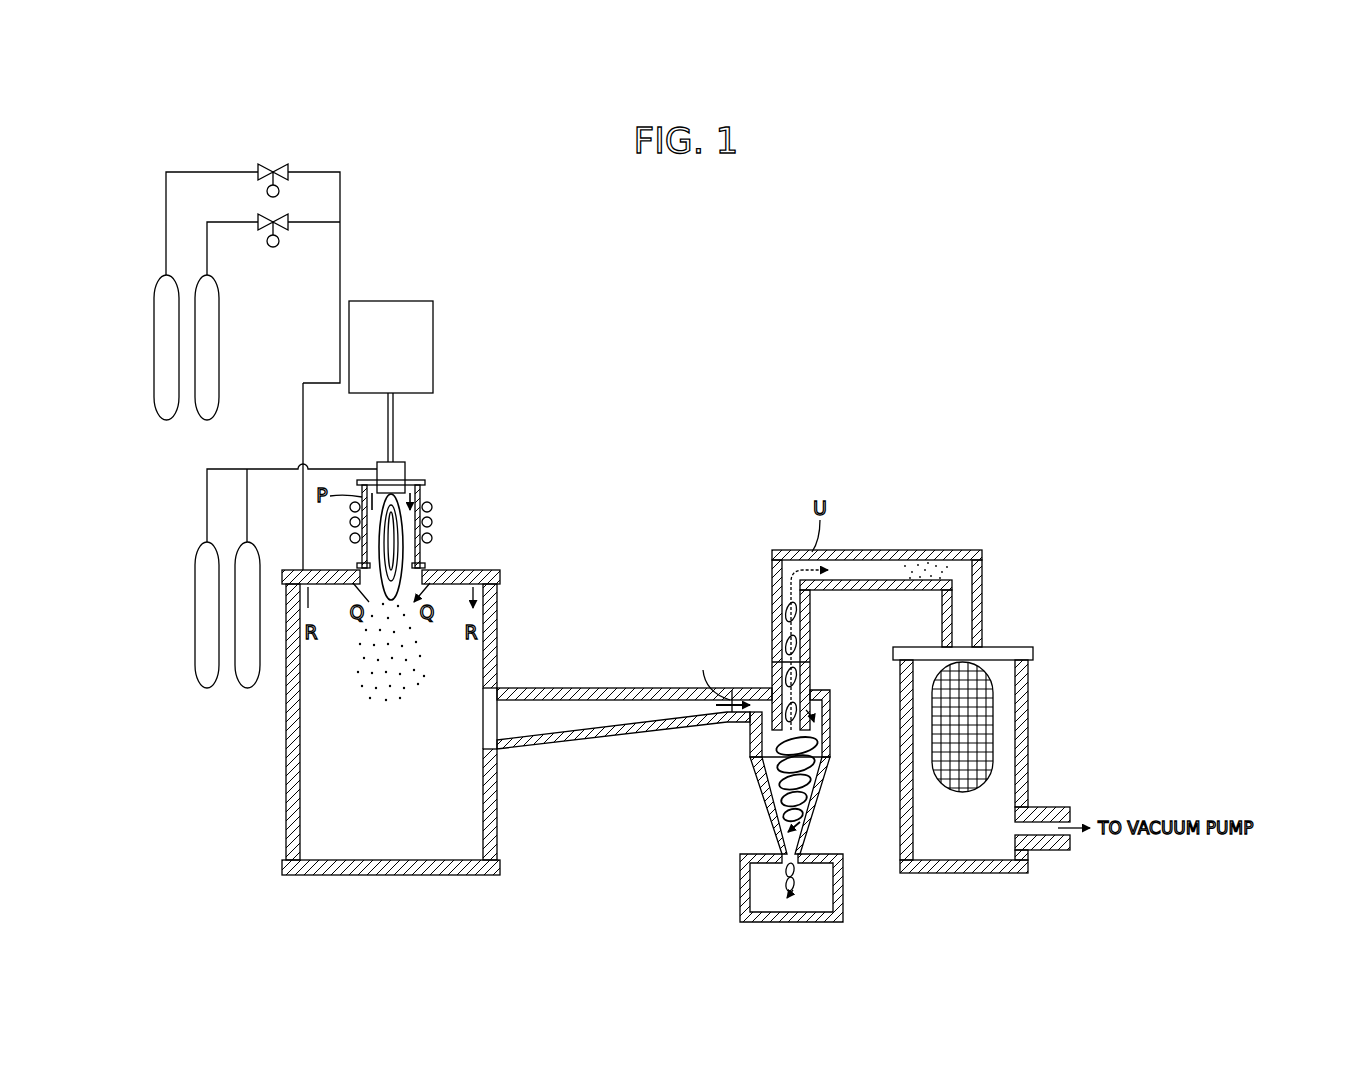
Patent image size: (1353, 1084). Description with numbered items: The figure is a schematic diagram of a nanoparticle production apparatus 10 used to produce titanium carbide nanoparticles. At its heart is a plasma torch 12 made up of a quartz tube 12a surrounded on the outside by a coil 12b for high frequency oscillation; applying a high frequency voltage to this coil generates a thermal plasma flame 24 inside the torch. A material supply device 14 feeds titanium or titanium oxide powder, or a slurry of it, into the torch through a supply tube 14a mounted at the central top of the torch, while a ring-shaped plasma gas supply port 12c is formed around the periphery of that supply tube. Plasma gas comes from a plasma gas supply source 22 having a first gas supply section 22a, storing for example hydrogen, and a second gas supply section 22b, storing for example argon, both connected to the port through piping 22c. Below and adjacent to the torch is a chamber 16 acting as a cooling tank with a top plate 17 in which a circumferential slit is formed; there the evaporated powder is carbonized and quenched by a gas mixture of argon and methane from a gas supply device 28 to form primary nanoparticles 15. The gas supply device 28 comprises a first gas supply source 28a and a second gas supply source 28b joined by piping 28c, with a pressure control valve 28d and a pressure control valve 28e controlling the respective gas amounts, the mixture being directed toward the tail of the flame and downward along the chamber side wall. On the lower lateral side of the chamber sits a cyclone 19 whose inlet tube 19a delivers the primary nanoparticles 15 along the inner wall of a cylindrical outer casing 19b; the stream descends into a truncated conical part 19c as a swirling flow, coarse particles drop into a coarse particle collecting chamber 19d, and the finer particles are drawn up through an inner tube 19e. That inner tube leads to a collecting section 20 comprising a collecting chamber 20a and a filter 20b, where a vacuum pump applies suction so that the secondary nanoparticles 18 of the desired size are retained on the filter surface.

The nanoparticle production apparatus 10 is at (801, 268).
The plasma torch 12 is at (399, 521).
The quartz tube 12a is at (422, 550).
The coil for high frequency oscillation 12b is at (433, 522).
The plasma gas supply port 12c is at (408, 482).
The material supply device 14 is at (433, 333).
The supply tube 14a is at (388, 432).
The primary nanoparticles 15 is at (367, 660).
The chamber 16 is at (403, 700).
The top plate 17 is at (500, 568).
The secondary nanoparticles 18 is at (932, 566).
The cyclone 19 is at (696, 746).
The inlet tube 19a is at (740, 727).
The outer casing 19b is at (832, 712).
The truncated conical part 19c is at (828, 810).
The coarse particle collecting chamber 19d is at (836, 890).
The inner tube 19e is at (810, 663).
The collecting section 20 is at (989, 733).
The collecting chamber 20a is at (987, 795).
The filter 20b is at (993, 730).
The plasma gas supply source 22 is at (246, 575).
The first gas supply section 22a is at (207, 690).
The second gas supply section 22b is at (247, 690).
The piping 22c is at (260, 469).
The thermal plasma flame 24 is at (362, 548).
The gas supply device 28 is at (222, 336).
The first gas supply source 28a is at (155, 352).
The second gas supply source 28b is at (219, 352).
The piping 28c is at (312, 383).
The pressure control valve 28d is at (262, 163).
The pressure control valve 28e is at (283, 232).